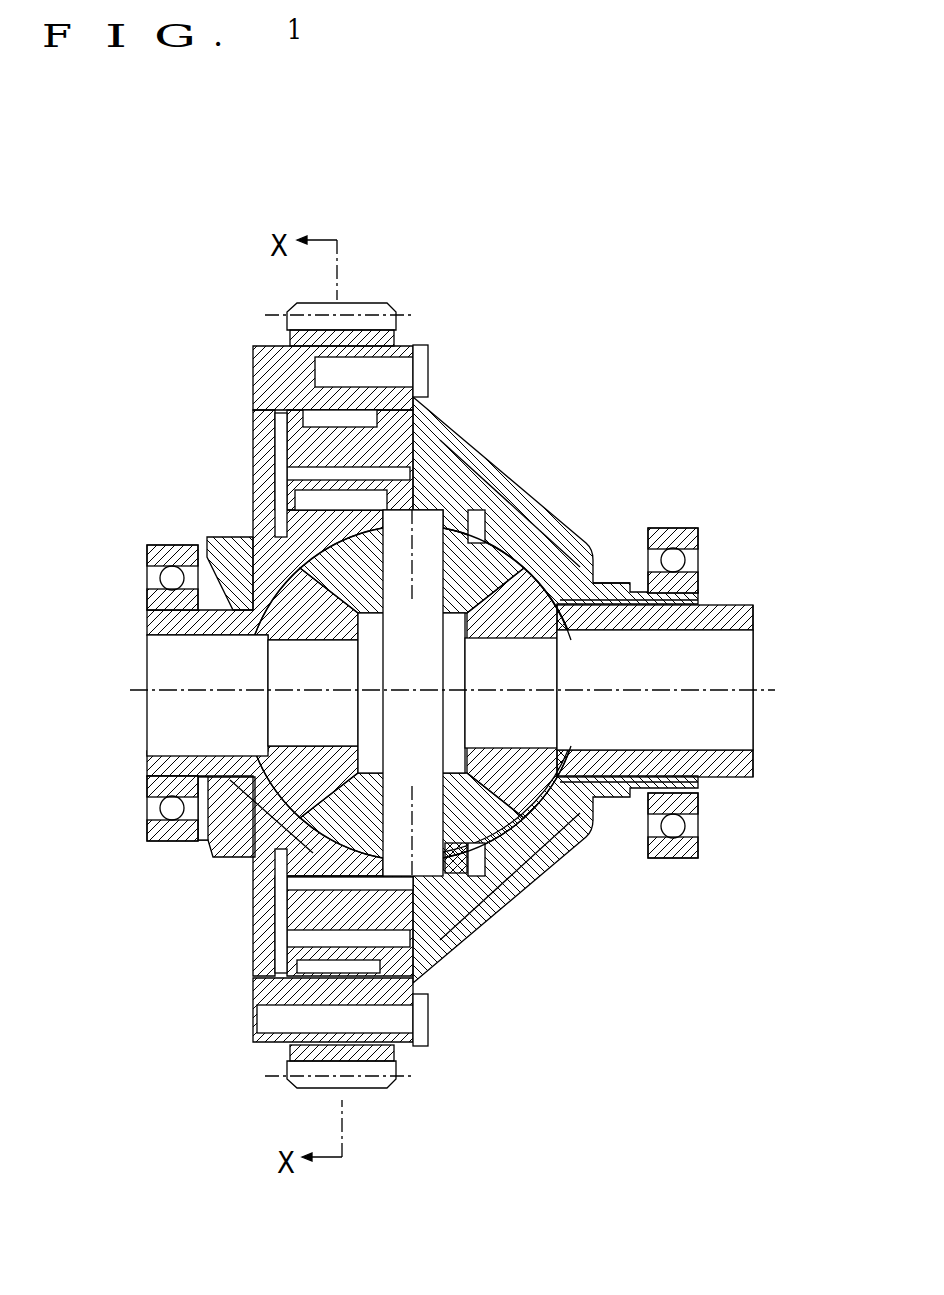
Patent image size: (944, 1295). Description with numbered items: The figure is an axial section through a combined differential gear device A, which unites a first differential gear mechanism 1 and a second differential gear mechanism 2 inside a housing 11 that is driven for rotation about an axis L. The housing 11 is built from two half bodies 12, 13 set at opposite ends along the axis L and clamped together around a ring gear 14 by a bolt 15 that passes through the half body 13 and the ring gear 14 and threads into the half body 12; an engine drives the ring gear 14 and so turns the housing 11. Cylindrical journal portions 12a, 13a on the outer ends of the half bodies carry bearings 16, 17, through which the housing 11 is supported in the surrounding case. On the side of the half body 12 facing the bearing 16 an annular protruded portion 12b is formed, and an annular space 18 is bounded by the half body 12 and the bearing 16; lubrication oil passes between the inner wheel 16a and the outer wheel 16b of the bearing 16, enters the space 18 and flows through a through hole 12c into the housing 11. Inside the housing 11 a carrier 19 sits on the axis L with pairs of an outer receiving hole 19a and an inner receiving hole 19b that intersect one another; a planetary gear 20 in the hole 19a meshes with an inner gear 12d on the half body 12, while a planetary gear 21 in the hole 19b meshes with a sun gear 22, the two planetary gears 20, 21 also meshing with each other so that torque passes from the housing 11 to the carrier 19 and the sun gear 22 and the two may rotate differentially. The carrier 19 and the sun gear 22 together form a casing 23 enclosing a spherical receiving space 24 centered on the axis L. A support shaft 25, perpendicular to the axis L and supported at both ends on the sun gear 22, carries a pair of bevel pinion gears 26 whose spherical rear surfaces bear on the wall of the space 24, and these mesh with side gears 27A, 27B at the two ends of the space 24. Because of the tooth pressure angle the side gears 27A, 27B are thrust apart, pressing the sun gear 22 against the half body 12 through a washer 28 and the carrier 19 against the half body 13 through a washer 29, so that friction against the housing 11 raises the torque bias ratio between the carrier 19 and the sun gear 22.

The first differential gear mechanism 1 is at (310, 412).
The second differential gear mechanism 2 is at (303, 575).
The housing 11 is at (566, 532).
The half body 12 is at (270, 435).
The journal portion 12a is at (168, 625).
The annular protruded portion 12b is at (222, 857).
The through hole 12c is at (230, 805).
The inner gear 12d is at (265, 398).
The half body 13 is at (420, 415).
The journal portion 13a is at (695, 598).
The ring gear 14 is at (372, 302).
The bolt 15 is at (431, 372).
The bearing 16 is at (168, 543).
The inner wheel 16a is at (152, 597).
The outer wheel 16b is at (147, 563).
The bearing 17 is at (676, 527).
The annular space 18 is at (167, 843).
The carrier 19 is at (545, 868).
The outer receiving hole 19a is at (295, 453).
The inner receiving hole 19b is at (330, 928).
The planetary gear 20 is at (410, 445).
The planetary gear 21 is at (405, 918).
The sun gear 22 is at (277, 890).
The casing 23 is at (525, 548).
The receiving space 24 is at (550, 600).
The support shaft 25 is at (470, 880).
The pinion gear 26 is at (497, 560).
The side gear 27A is at (308, 770).
The side gear 27B is at (567, 805).
The washer 28 is at (283, 503).
The washer 29 is at (517, 880).
The combined differential gear device A is at (534, 303).
The axis L is at (773, 688).